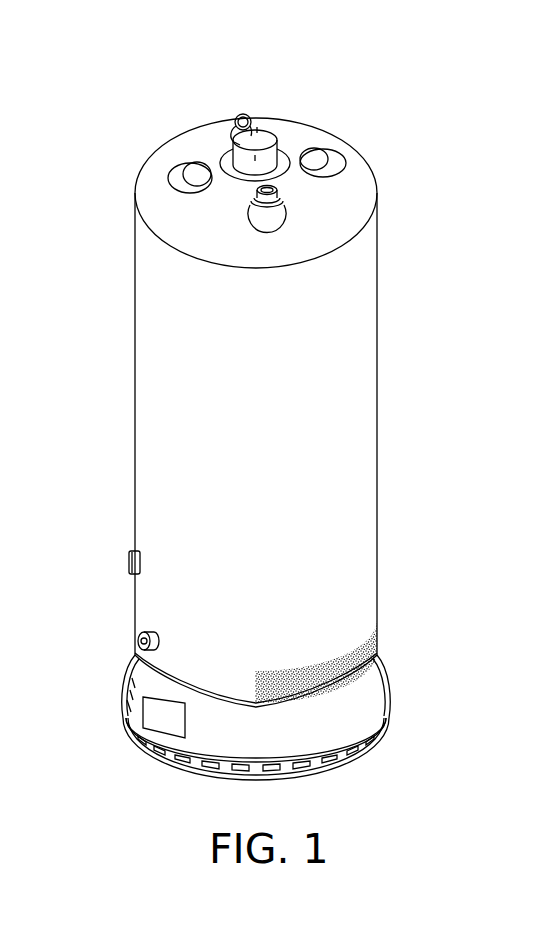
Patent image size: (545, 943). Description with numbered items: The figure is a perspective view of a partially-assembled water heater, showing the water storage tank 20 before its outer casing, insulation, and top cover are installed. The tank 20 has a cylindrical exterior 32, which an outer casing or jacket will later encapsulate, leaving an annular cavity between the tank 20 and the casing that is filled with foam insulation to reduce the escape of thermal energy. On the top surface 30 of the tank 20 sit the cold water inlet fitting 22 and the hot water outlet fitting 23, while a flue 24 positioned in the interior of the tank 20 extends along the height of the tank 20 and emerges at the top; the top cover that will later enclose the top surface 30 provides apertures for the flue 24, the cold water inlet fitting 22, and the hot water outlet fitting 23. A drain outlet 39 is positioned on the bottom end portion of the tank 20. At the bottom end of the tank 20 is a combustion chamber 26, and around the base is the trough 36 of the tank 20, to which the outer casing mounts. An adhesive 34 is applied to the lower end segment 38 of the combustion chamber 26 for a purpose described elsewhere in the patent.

The water storage tank 20 is at (363, 121).
The cold water inlet fitting 22 is at (245, 113).
The hot water outlet fitting 23 is at (277, 192).
The flue 24 is at (248, 142).
The combustion chamber 26 is at (167, 707).
The top surface 30 is at (358, 197).
The cylindrical exterior 32 is at (198, 417).
The adhesive 34 is at (378, 644).
The trough 36 is at (391, 700).
The lower end segment 38 is at (313, 717).
The drain outlet 39 is at (139, 627).